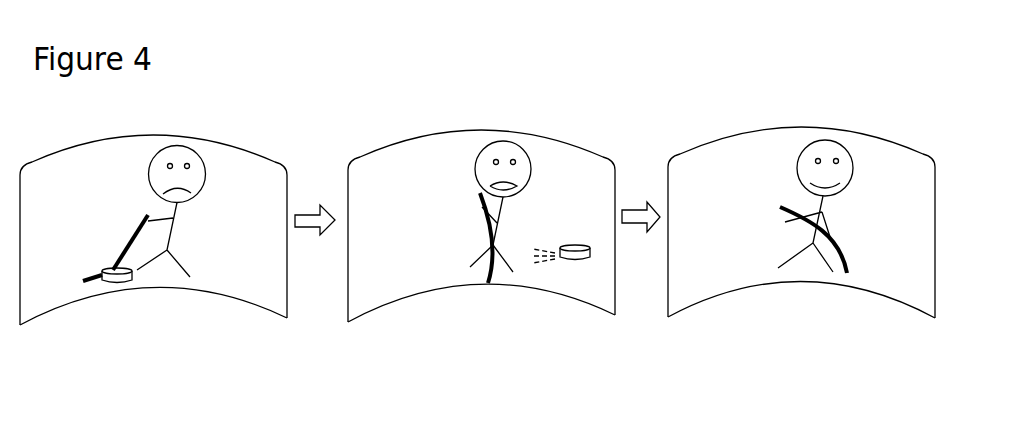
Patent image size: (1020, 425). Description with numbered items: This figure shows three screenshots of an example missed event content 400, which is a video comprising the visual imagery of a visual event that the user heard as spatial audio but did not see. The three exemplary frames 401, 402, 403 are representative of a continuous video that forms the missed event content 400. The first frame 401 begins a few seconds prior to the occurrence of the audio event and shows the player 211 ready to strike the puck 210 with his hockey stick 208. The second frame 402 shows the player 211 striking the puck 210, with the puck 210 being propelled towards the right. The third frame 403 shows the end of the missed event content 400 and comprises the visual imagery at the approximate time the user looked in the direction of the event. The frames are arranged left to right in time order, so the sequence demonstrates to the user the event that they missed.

The missed event content 400 is at (332, 75).
The first frame 401 is at (217, 312).
The second frame 402 is at (520, 310).
The third frame 403 is at (728, 310).
The player 211 is at (203, 158).
The hockey stick 208 is at (100, 283).
The puck 210 is at (124, 282).